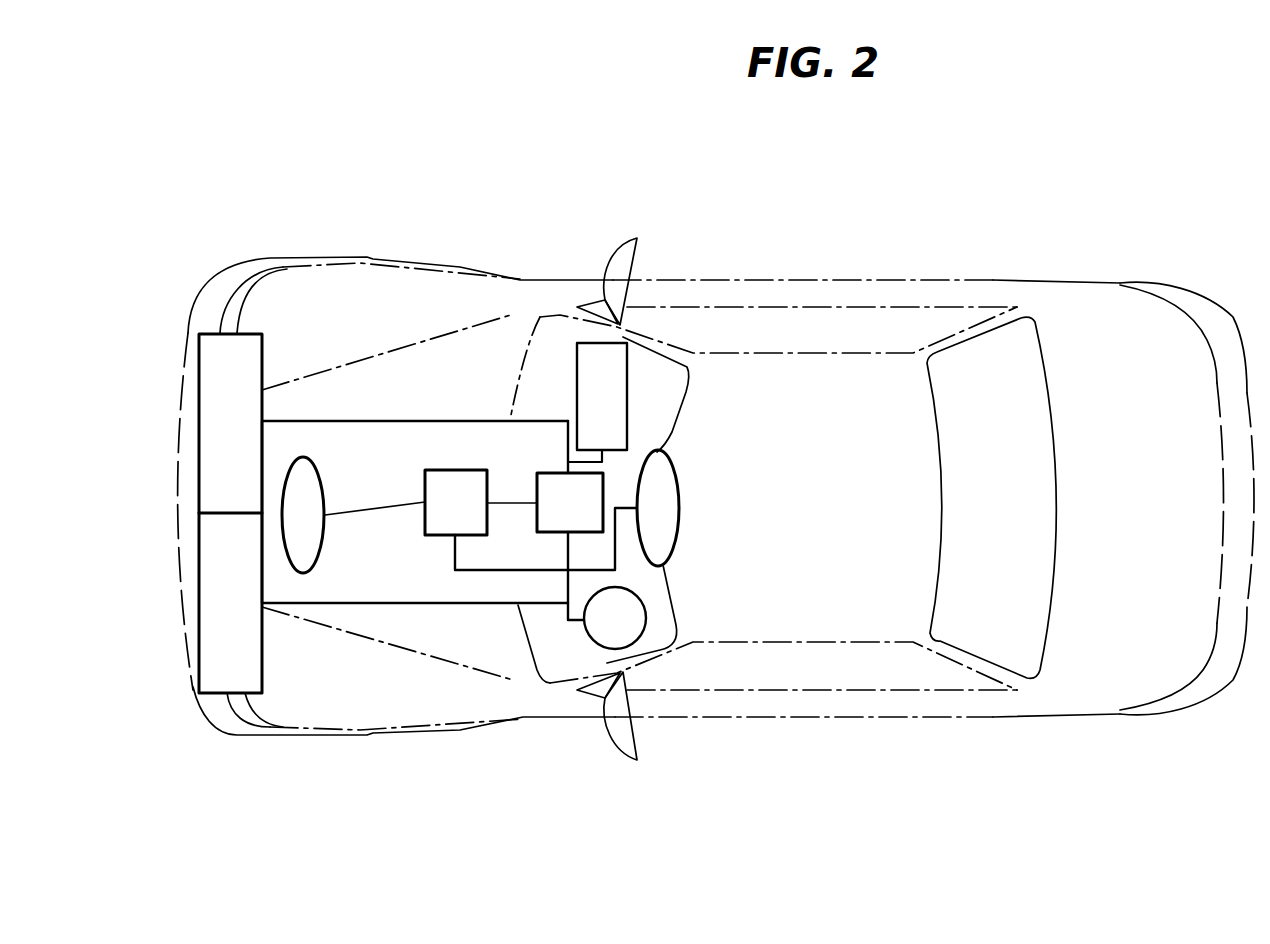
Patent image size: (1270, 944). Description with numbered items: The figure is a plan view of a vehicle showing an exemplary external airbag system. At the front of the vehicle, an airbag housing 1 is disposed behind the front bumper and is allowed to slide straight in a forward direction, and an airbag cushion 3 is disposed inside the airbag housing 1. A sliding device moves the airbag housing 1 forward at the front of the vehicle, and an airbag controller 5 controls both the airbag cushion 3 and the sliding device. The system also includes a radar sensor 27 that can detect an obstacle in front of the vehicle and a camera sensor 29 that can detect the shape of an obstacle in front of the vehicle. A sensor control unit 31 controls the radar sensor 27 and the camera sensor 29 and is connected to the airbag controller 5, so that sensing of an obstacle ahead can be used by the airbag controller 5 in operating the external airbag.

The airbag housing 1 is at (210, 333).
The airbag cushion 3 is at (228, 562).
The airbag controller 5 is at (548, 485).
The radar sensor 27 is at (312, 552).
The camera sensor 29 is at (680, 508).
The sensor control unit 31 is at (438, 527).